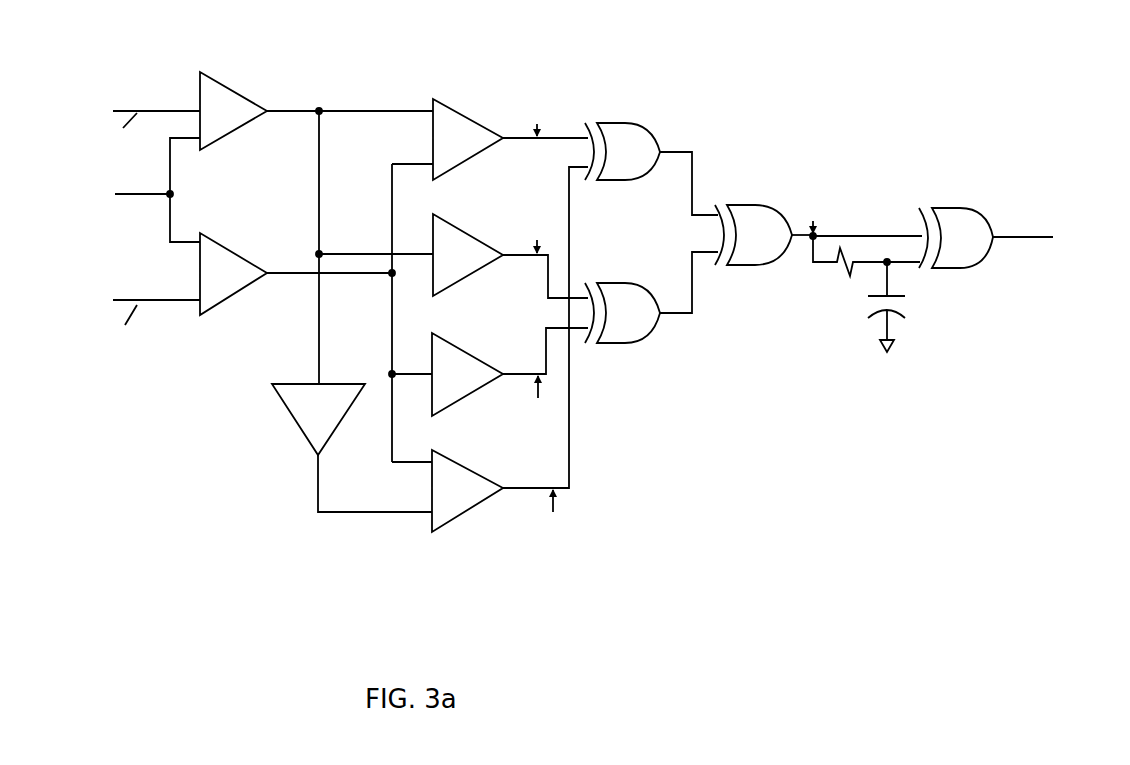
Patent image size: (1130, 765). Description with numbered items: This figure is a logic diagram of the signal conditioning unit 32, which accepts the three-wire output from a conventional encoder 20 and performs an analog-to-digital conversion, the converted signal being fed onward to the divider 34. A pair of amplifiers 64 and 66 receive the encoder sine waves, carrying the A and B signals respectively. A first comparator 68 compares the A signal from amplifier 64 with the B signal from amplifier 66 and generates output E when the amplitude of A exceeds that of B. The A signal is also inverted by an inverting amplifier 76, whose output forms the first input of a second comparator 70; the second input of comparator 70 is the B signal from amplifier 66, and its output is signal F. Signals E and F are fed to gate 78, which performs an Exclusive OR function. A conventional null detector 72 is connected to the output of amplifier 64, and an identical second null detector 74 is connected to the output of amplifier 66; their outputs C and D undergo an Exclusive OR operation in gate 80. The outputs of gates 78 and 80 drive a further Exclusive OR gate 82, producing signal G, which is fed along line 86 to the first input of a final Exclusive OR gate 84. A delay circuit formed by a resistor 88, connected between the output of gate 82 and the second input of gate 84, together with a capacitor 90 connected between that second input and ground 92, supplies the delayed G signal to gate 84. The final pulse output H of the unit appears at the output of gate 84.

The encoder 20 is at (128, 228).
The signal conditioning unit 32 is at (557, 117).
The divider 34 is at (1013, 238).
The amplifier 64 is at (235, 90).
The amplifier 66 is at (228, 248).
The first comparator 68 is at (448, 102).
The second comparator 70 is at (472, 467).
The null detector 72 is at (467, 230).
The second null detector 74 is at (468, 352).
The inverting amplifier 76 is at (293, 420).
The Exclusive OR gate 78 is at (650, 135).
The Exclusive OR gate 80 is at (650, 340).
The Exclusive OR gate 82 is at (763, 205).
The final Exclusive OR gate 84 is at (967, 205).
The line 86 is at (873, 232).
The resistor 88 is at (845, 265).
The capacitor 90 is at (905, 302).
The ground 92 is at (890, 345).